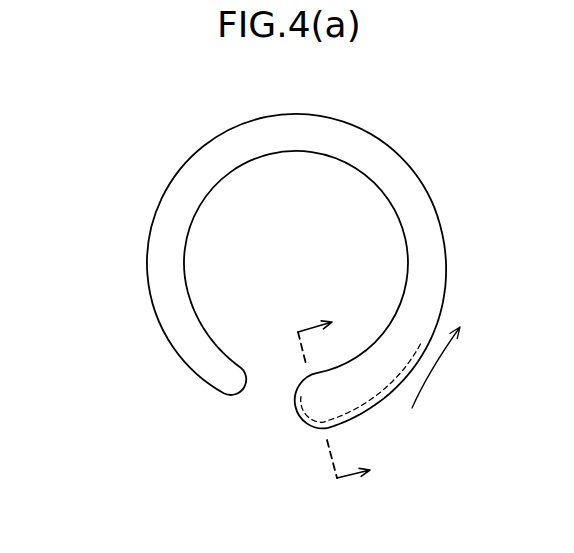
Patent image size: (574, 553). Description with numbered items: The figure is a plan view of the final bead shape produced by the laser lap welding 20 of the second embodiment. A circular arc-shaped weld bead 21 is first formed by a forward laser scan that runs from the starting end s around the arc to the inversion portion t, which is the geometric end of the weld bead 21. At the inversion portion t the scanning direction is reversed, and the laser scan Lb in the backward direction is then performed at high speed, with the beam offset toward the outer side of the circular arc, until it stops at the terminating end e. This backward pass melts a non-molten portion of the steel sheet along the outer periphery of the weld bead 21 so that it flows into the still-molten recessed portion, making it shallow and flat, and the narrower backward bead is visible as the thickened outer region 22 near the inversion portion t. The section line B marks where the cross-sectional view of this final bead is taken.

The laser lap welding 20 is at (190, 148).
The weld bead 21 is at (153, 214).
The widened end portion 22 is at (375, 405).
The terminating end e is at (415, 317).
The starting end s is at (230, 372).
The inversion portion t is at (298, 405).
The line B- B is at (327, 407).
The laser scan in the backward direction Lb is at (446, 367).